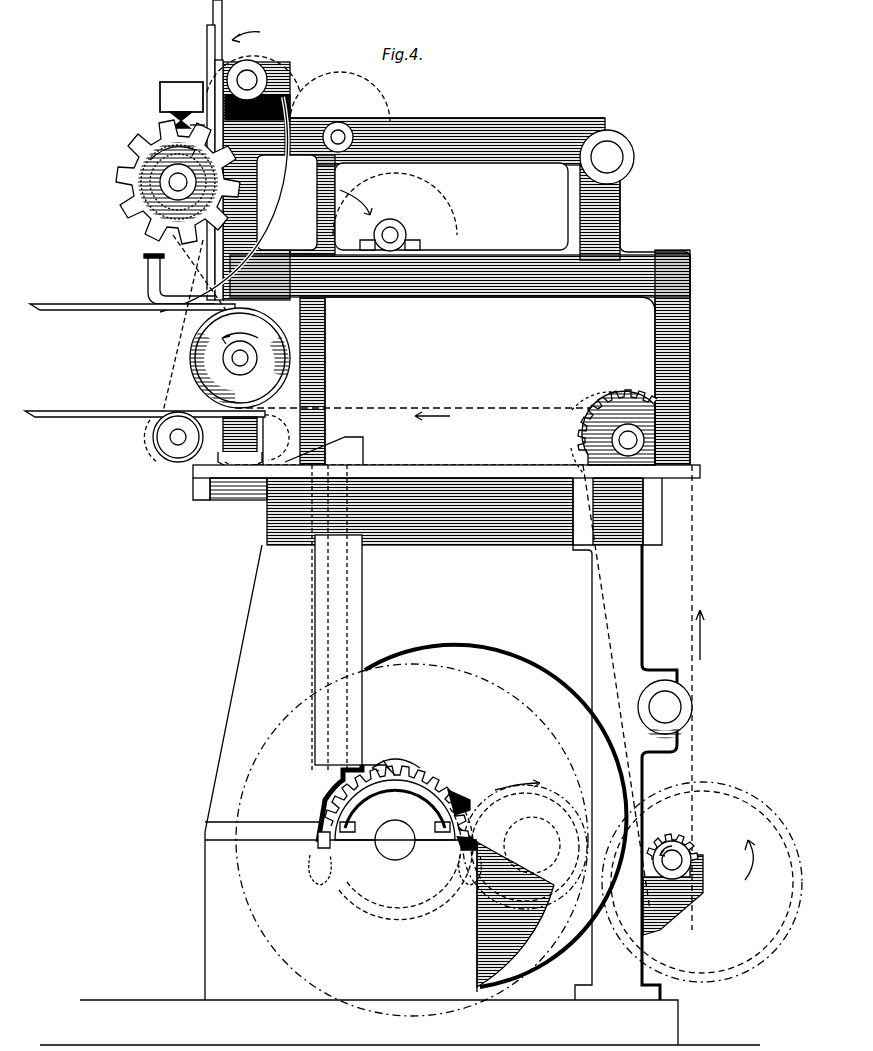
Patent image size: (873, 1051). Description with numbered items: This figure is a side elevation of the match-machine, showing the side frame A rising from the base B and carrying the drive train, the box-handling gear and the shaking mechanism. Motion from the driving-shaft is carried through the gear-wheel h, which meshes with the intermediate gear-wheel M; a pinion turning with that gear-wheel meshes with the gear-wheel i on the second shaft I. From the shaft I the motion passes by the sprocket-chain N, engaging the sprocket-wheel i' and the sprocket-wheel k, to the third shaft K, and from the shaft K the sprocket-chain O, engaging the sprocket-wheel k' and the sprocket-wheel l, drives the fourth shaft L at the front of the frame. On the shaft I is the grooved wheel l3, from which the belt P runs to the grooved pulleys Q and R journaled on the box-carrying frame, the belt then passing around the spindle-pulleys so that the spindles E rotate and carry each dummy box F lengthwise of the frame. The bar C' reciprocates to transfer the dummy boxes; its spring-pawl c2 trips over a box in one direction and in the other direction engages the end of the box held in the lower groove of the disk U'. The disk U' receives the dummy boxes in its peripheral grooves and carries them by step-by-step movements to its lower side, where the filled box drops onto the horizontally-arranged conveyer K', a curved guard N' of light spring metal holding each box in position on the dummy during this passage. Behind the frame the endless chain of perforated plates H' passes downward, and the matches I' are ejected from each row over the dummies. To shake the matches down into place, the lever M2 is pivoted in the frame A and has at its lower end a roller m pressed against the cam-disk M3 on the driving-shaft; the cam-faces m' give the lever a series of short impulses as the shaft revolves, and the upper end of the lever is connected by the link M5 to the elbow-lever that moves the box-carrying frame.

The endless chain of perforated plates H' is at (231, 150).
The matches I' is at (181, 88).
The dummy box F is at (160, 97).
The grooved pulley R is at (132, 155).
The grooved pulley Q is at (196, 181).
The link M5 is at (312, 168).
The curved guard N' is at (456, 263).
The bar C' is at (167, 281).
The spring-pawl c2 is at (144, 256).
The disk U' is at (158, 188).
The conveyer K' is at (145, 360).
The belt P is at (188, 345).
The fourth shaft L is at (178, 445).
The grooved wheel l3 is at (158, 458).
The sprocket-wheel l is at (274, 434).
The sprocket-chain O is at (481, 410).
The third shaft K is at (635, 643).
The sprocket-wheel k is at (587, 393).
The sprocket-wheel k' is at (569, 452).
The lever M2 is at (327, 330).
The side frame A is at (262, 570).
The base B is at (400, 1022).
The intermediate gear-wheel M is at (558, 790).
The spindle E is at (395, 860).
The cam-disk M3 is at (400, 768).
The gear-wheel h is at (450, 802).
The cam-face m' is at (401, 836).
The roller m is at (303, 849).
The sprocket-chain N is at (680, 663).
The second shaft I is at (673, 870).
The sprocket-wheel i' is at (692, 841).
The gear-wheel i is at (702, 866).